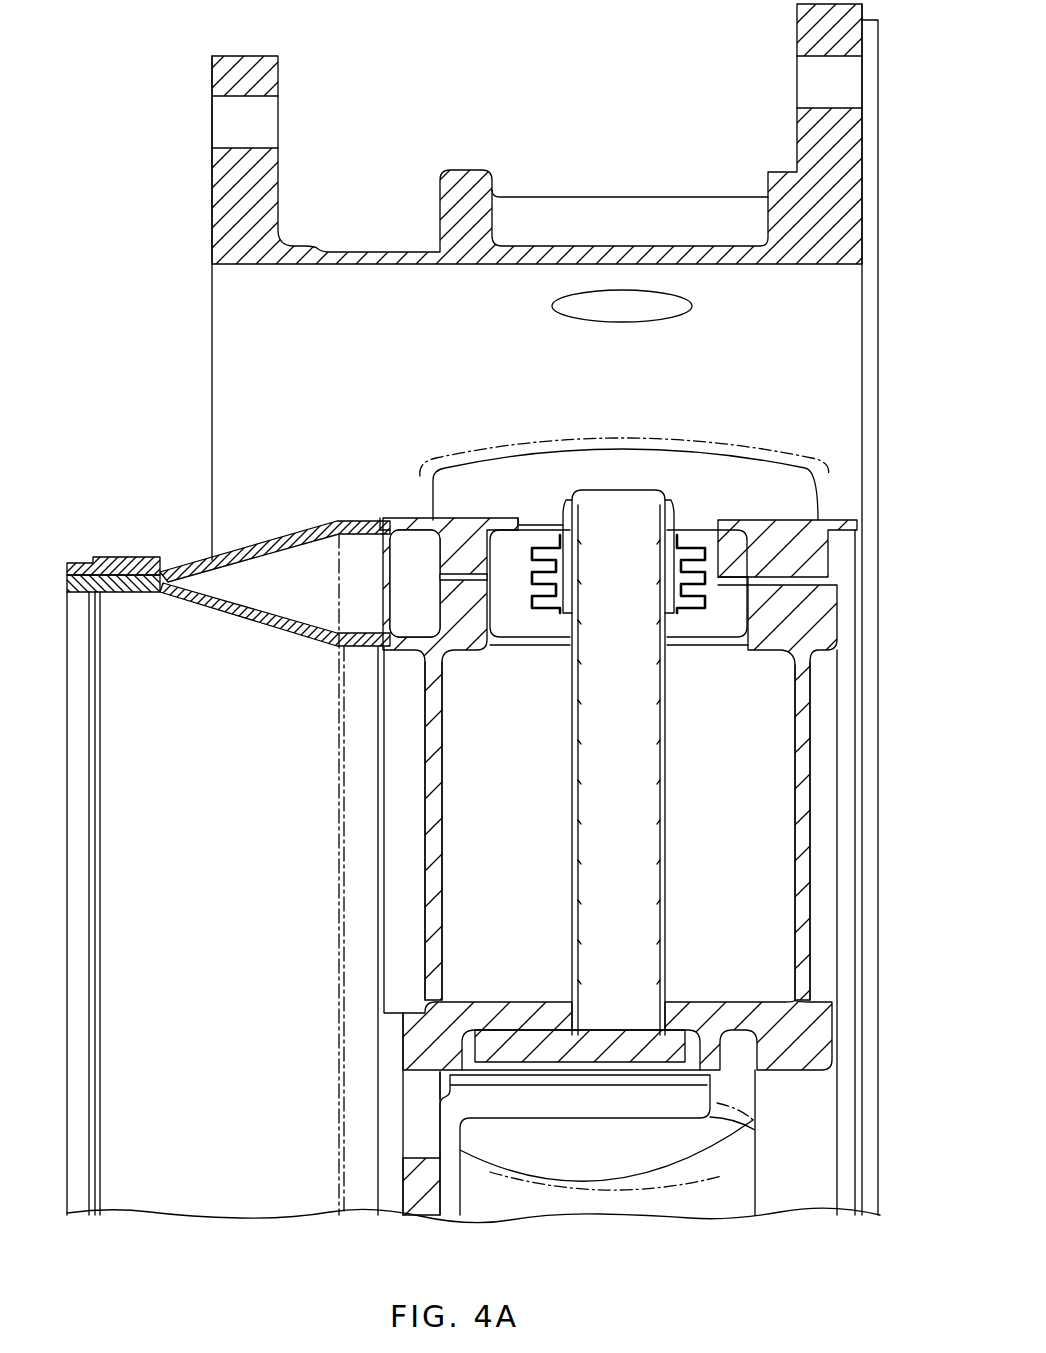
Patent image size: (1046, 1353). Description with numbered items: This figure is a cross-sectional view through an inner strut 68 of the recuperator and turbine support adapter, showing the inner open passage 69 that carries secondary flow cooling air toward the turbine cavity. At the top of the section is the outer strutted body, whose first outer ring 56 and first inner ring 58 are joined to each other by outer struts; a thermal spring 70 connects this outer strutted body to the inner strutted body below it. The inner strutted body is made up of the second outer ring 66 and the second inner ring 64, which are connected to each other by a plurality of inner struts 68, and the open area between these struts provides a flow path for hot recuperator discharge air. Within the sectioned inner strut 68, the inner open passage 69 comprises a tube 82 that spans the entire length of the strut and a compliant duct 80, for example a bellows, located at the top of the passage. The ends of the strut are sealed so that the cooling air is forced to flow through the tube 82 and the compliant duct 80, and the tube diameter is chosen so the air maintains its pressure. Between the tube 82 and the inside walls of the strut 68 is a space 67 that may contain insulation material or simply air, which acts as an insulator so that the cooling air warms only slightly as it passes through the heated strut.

The first outer ring 56 is at (826, 206).
The first inner ring 58 is at (447, 532).
The second inner ring 64 is at (803, 1027).
The second outer ring 66 is at (452, 650).
The space 67 is at (750, 872).
The inner strut 68 is at (803, 842).
The inner open passage 69 is at (640, 756).
The thermal spring 70 is at (243, 692).
The compliant duct 80 is at (695, 548).
The tube 82 is at (666, 720).